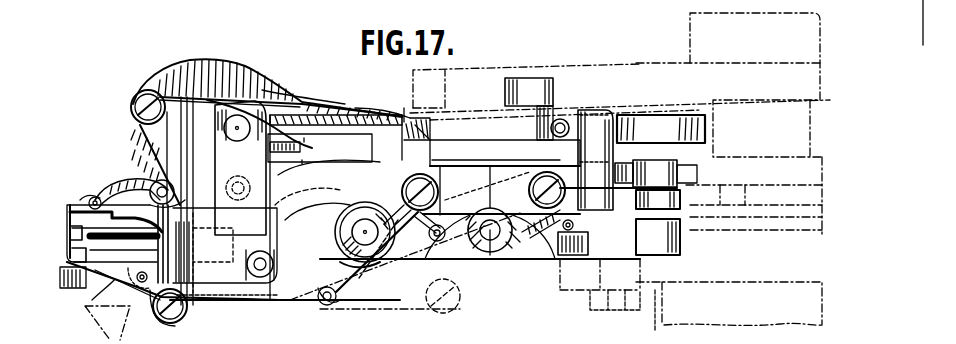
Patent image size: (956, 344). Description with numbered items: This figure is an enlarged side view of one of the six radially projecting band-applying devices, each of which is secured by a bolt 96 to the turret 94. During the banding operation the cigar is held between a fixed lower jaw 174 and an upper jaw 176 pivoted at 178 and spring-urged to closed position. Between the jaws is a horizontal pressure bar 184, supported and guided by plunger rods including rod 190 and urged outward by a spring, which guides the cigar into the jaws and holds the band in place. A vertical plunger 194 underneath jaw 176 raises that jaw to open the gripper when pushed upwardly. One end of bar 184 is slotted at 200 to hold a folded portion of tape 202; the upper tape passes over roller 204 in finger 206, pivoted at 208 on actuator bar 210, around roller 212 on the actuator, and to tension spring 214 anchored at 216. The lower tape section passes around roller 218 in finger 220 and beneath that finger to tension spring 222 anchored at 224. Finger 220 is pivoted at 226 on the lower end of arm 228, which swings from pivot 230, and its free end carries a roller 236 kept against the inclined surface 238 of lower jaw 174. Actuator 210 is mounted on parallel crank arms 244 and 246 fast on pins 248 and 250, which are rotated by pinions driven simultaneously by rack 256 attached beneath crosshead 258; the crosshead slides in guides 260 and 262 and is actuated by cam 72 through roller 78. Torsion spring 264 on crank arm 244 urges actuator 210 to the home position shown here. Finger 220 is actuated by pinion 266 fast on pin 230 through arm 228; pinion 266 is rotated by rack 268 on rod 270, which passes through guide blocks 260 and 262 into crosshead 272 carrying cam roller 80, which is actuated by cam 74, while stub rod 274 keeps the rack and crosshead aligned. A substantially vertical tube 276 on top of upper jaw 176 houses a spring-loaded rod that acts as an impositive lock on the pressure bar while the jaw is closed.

The cam 72 is at (623, 64).
The cam 74 is at (712, 211).
The roller 78 is at (555, 91).
The roller 80 is at (749, 197).
The turret 94 is at (656, 327).
The bolt 96 is at (640, 311).
The lower jaw 174 is at (86, 290).
The upper jaw 176 is at (68, 215).
The pivot pin 178 is at (255, 181).
The pressure bar 184 is at (72, 254).
The plunger rod 190 is at (120, 247).
The vertical plunger 194 is at (198, 264).
The slot 200 is at (70, 233).
The tape 202 is at (130, 287).
The roller 204 is at (90, 201).
The finger 206 is at (120, 183).
The pivot pin 208 is at (183, 193).
The actuator bar 210 is at (212, 72).
The roller 212 is at (130, 100).
The tension spring 214 is at (440, 109).
The anchor 216 is at (566, 121).
The roller 218 is at (140, 268).
The finger 220 is at (226, 299).
The tension spring 222 is at (300, 307).
The anchor 224 is at (574, 226).
The pivot pin 226 is at (270, 258).
The arm 228 is at (336, 207).
The pivot pin 230 is at (250, 129).
The roller 236 is at (172, 326).
The inclined surface 238 is at (92, 301).
The crank arm 244 is at (378, 171).
The crank arm 246 is at (512, 191).
The pin 248 is at (364, 232).
The pin 250 is at (490, 259).
The rack 256 is at (595, 160).
The crosshead 258 is at (708, 131).
The guide block 260 is at (400, 117).
The guide block 262 is at (628, 109).
The torsion spring 264 is at (298, 229).
The pinion 266 is at (228, 109).
The rack 268 is at (300, 149).
The rod 270 is at (545, 169).
The crosshead 272 is at (652, 167).
The stub rod 274 is at (641, 162).
The tube 276 is at (172, 132).